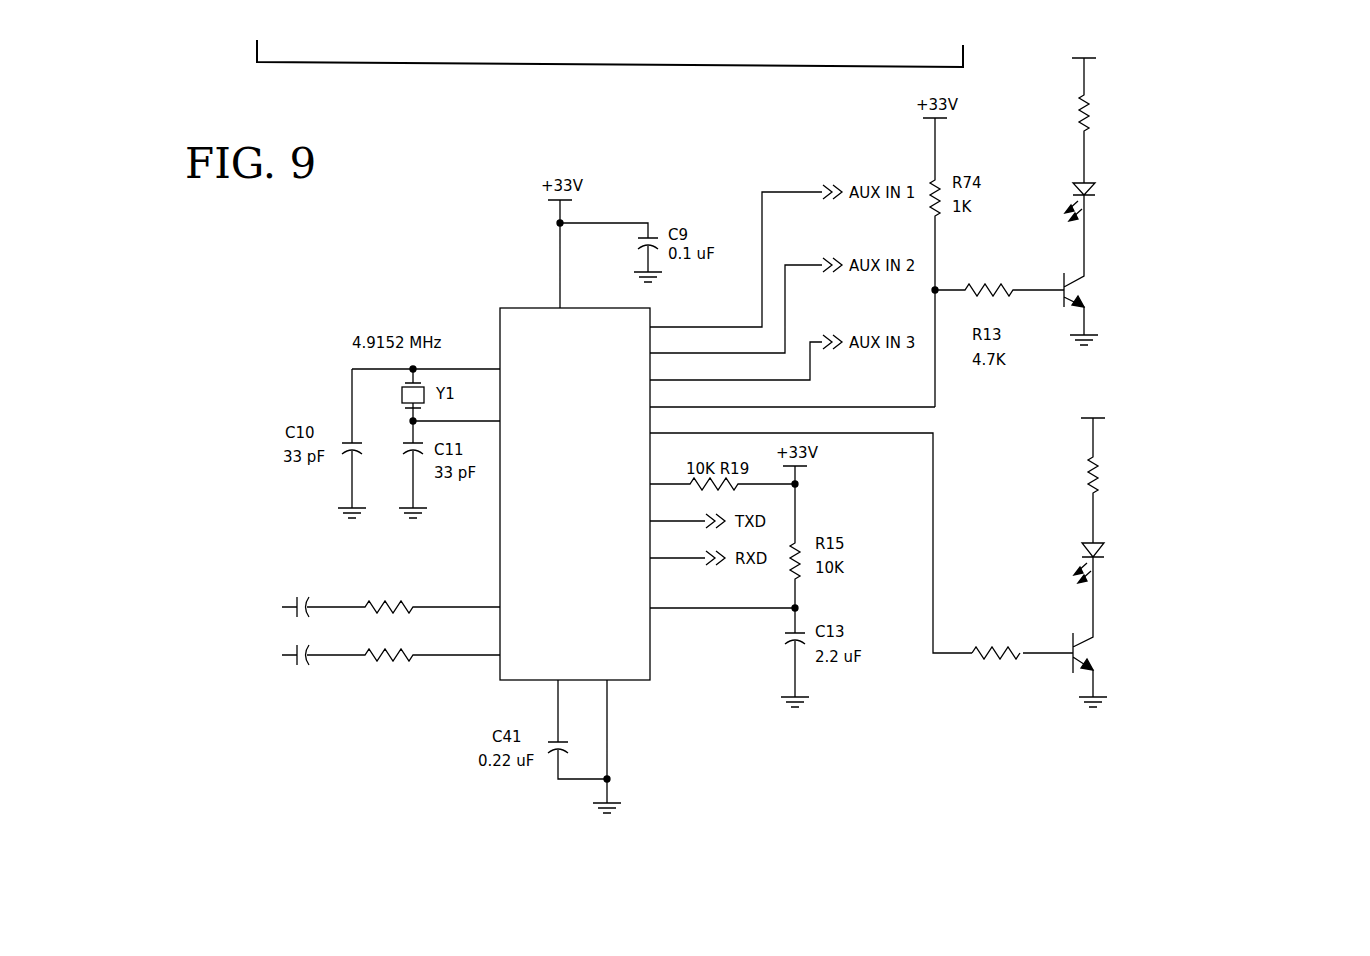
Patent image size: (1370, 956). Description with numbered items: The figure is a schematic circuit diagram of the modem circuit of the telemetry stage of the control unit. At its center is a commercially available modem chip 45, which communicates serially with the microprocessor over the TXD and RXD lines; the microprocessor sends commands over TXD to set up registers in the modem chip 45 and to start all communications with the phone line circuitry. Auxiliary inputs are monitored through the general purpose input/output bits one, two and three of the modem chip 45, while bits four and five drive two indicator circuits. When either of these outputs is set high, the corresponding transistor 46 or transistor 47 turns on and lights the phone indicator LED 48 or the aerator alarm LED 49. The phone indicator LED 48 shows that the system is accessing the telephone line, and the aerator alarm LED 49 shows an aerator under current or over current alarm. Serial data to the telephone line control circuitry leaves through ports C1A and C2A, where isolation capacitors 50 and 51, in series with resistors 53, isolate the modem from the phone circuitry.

The modem chip 45 is at (528, 473).
The transistor 46 is at (1139, 270).
The transistor 47 is at (1123, 633).
The phone indicator LED 48 is at (1140, 136).
The aerator alarm LED 49 is at (1169, 500).
The isolation capacitor 50 is at (346, 580).
The isolation capacitor 51 is at (346, 682).
The resistors R16/R18 53 is at (391, 629).